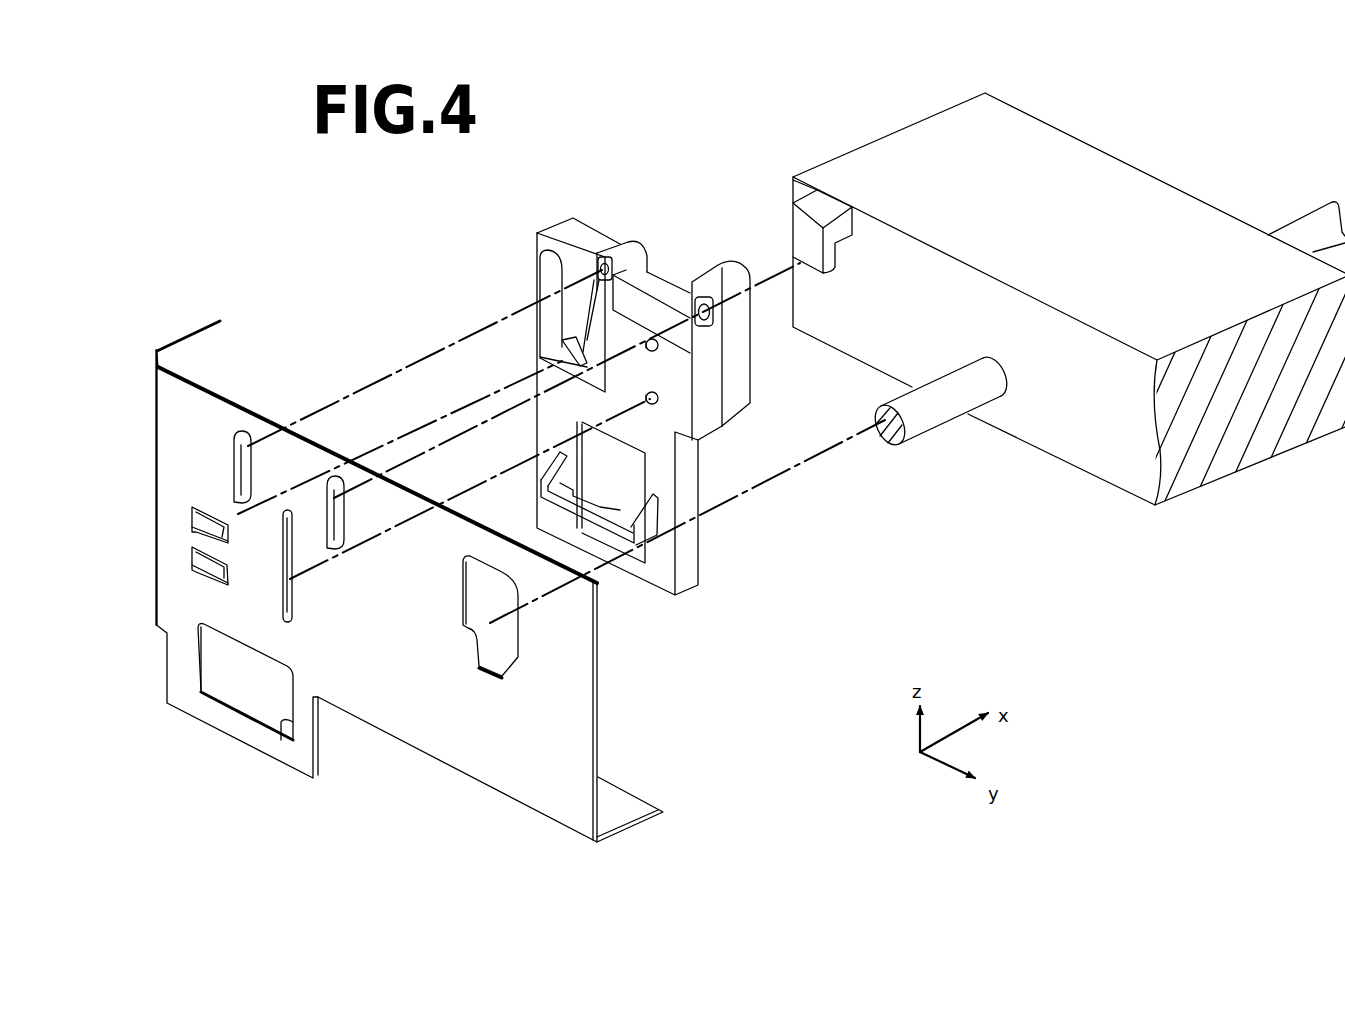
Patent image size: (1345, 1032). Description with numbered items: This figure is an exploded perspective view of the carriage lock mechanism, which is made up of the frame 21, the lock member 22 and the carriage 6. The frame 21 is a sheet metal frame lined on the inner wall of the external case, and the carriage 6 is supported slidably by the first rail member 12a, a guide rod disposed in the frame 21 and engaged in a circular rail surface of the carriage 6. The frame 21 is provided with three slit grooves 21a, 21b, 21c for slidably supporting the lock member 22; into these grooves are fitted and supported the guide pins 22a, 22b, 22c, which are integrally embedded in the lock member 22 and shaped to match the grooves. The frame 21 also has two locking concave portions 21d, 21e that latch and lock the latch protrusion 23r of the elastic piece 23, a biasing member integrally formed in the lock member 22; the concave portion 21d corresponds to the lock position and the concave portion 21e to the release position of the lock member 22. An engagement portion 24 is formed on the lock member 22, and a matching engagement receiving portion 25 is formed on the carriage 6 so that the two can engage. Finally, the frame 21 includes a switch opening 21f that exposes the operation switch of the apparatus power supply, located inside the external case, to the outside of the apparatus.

The carriage 6 is at (918, 157).
The first rail member 12a is at (934, 417).
The frame 21 is at (163, 387).
The slit groove 21a is at (240, 472).
The slit groove 21b is at (341, 550).
The slit groove 21c is at (292, 608).
The locking concave portion 21d is at (192, 515).
The locking concave portion 21e is at (192, 570).
The switch opening 21f is at (281, 742).
The lock member 22 is at (558, 230).
The guide pin 22a is at (604, 256).
The guide pin 22b is at (713, 322).
The guide pin 22c is at (660, 400).
The elastic piece 23 is at (562, 289).
The latch protrusion 23r is at (564, 340).
The engagement portion 24 is at (655, 290).
The engagement receiving portion 25 is at (802, 233).